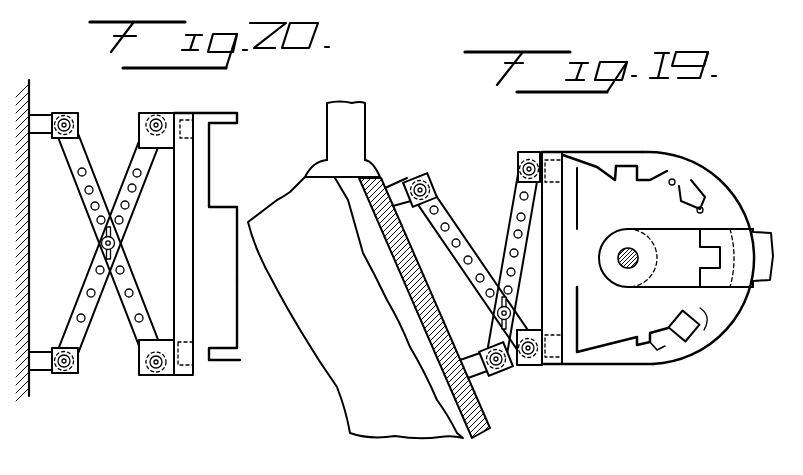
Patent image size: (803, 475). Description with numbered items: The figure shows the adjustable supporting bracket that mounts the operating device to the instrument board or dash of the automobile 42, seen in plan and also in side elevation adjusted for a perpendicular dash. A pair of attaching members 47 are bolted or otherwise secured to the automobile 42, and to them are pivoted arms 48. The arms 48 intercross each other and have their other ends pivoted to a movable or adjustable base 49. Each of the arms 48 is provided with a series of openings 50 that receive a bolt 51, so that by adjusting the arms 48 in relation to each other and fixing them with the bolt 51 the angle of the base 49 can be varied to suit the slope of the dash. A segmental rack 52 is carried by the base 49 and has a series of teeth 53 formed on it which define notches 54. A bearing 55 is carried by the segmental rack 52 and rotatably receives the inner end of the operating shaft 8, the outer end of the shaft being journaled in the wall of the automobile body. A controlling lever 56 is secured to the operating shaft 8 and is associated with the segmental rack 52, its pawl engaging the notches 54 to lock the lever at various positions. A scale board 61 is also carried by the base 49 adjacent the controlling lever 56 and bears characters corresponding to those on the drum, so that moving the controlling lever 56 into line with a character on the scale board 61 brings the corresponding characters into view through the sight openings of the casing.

In FIG. 19, the operating shaft 8 is at (622, 272).
In FIG. 20, the automobile 42 is at (29, 383).
In FIG. 19, the automobile 42 is at (369, 270).
In FIG. 20, the attaching members 47 is at (53, 112).
In FIG. 19, the attaching members 47 is at (408, 178).
In FIG. 20, the arms 48 is at (82, 162).
In FIG. 19, the arms 48 is at (514, 245).
In FIG. 20, the base 49 is at (188, 180).
In FIG. 19, the base 49 is at (550, 190).
In FIG. 20, the openings 50 is at (157, 188).
In FIG. 19, the openings 50 is at (517, 200).
In FIG. 20, the bolt 51 is at (98, 247).
In FIG. 19, the bolt 51 is at (495, 312).
In FIG. 19, the segmental rack 52 is at (645, 153).
In FIG. 19, the teeth 53 is at (675, 180).
In FIG. 19, the notches 54 is at (703, 210).
In FIG. 20, the bearing 55 is at (220, 273).
In FIG. 19, the bearing 55 is at (588, 230).
In FIG. 19, the controlling lever 56 is at (706, 318).
In FIG. 20, the scale board 61 is at (227, 113).
In FIG. 19, the scale board 61 is at (725, 206).